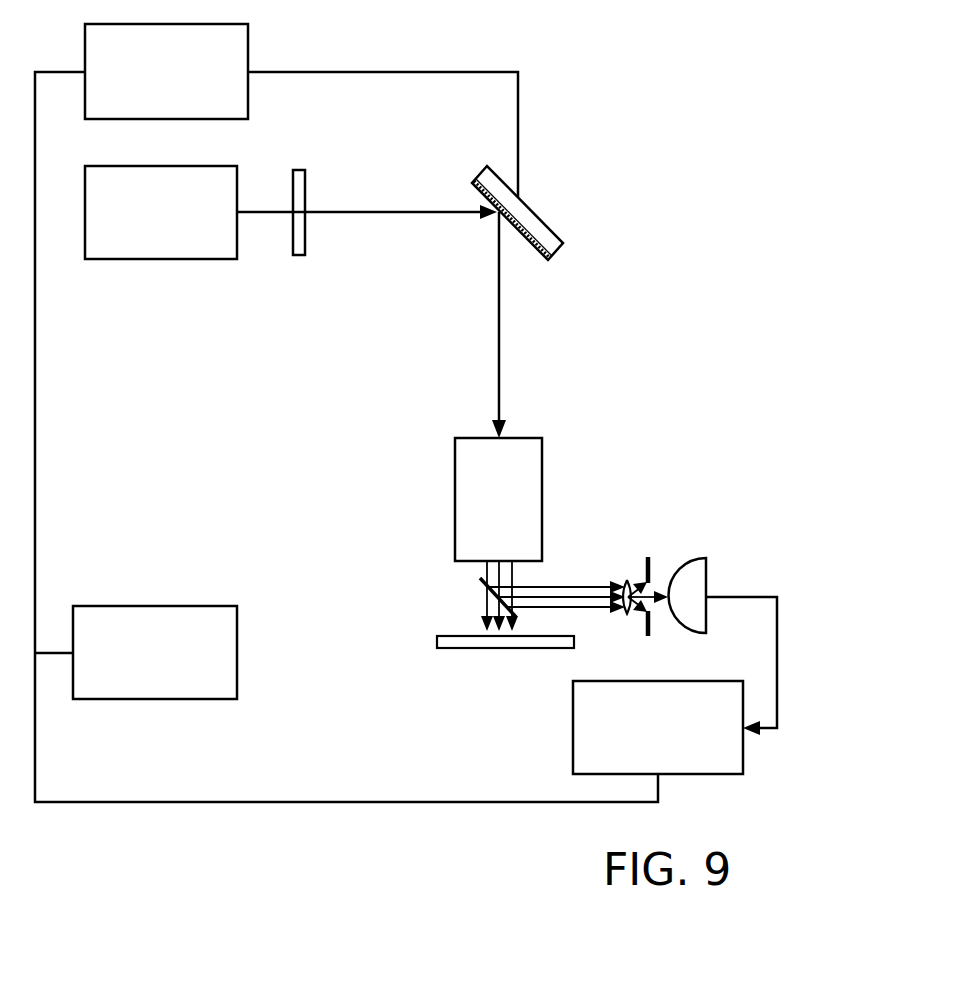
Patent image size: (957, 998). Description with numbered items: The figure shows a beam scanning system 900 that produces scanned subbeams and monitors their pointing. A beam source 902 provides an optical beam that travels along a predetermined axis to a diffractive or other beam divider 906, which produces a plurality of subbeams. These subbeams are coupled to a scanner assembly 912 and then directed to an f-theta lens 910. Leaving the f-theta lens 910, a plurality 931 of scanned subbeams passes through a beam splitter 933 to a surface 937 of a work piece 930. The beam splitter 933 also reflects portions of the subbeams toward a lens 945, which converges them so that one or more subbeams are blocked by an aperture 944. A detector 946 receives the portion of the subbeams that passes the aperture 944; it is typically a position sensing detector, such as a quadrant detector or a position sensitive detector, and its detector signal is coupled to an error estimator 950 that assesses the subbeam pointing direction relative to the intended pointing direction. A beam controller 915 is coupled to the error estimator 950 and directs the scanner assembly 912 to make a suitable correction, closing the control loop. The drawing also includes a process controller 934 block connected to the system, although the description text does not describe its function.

The beam scanning system 900 is at (676, 97).
The beam source 902 is at (161, 212).
The beam divider 906 is at (305, 170).
The f-theta lens 910 is at (542, 455).
The scanner assembly 912 is at (557, 240).
The beam controller 915 is at (166, 71).
The work piece 930 is at (437, 643).
The plurality of scanned subbeams 931 is at (512, 575).
The beam splitter 933 is at (480, 578).
The process controller 934 is at (155, 652).
The surface 937 is at (460, 635).
The aperture 944 is at (651, 570).
The lens 945 is at (632, 580).
The detector 946 is at (703, 560).
The error estimator 950 is at (658, 727).